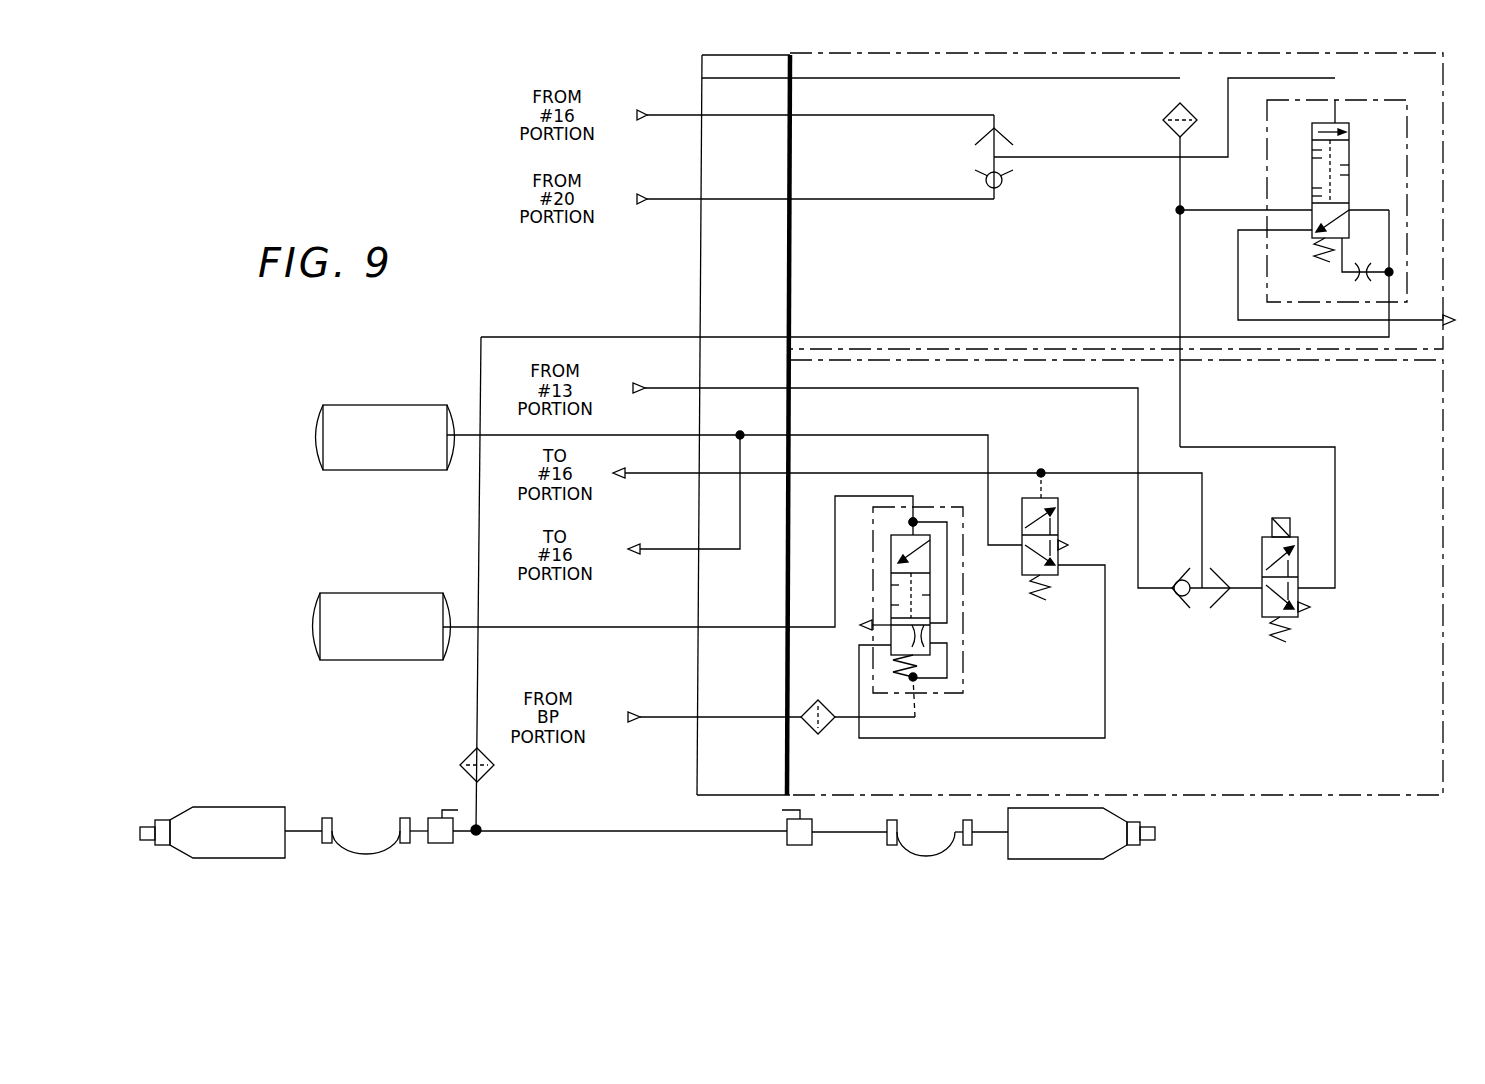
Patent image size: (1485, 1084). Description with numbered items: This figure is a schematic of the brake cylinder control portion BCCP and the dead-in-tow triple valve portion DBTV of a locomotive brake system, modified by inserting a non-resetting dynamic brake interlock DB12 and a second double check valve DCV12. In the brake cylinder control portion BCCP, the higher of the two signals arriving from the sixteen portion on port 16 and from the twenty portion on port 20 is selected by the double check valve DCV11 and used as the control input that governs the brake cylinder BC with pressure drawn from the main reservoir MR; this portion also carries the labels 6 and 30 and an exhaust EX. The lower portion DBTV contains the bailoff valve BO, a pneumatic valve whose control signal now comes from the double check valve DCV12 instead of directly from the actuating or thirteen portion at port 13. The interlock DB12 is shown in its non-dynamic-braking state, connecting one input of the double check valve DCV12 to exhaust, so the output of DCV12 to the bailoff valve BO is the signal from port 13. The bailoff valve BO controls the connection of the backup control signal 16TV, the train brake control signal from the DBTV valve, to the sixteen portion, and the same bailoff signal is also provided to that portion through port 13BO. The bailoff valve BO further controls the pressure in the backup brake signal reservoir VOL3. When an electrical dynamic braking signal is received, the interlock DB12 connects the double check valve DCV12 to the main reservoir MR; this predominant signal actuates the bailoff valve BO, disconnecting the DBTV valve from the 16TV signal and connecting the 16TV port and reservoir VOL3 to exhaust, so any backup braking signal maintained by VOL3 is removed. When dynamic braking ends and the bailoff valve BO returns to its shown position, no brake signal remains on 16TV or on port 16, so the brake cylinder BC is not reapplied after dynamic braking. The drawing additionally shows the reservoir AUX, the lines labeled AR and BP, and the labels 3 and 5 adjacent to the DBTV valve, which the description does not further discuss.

The port 3 of double ball check / brake valve 3 is at (866, 643).
The port 5 is at (923, 502).
The port 6 of BCCP valve 6 is at (1282, 203).
The actuating control portion 13 is at (903, 476).
The brake control portion signal port 16 is at (999, 178).
The twenty portion signal 20 is at (815, 190).
The choke 30 is at (1367, 271).
The main reservoir MR is at (922, 79).
The auxiliary reservoir pipe AR is at (678, 561).
The brake pipe BP is at (788, 705).
The brake cylinder BC is at (229, 822).
The exhaust EX is at (1359, 280).
The backup train brake control signal port 16TV is at (734, 484).
The bailoff control signal port 13BO is at (907, 520).
The double check valve DCV11 is at (1127, 138).
The second double check valve DCV12 is at (1217, 602).
The non-resetting dynamic brake interlock DB12 is at (1283, 565).
The bailoff valve BO is at (1051, 537).
The dead-in-tow triple valve control portion DBTV is at (982, 622).
The brake cylinder control portion BCCP is at (1337, 185).
The backup brake signal reservoir VOL3 is at (385, 437).
The auxiliary reservoir AUX is at (382, 626).